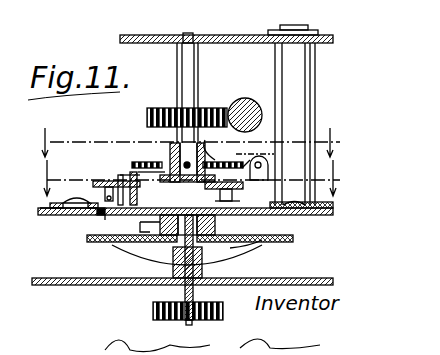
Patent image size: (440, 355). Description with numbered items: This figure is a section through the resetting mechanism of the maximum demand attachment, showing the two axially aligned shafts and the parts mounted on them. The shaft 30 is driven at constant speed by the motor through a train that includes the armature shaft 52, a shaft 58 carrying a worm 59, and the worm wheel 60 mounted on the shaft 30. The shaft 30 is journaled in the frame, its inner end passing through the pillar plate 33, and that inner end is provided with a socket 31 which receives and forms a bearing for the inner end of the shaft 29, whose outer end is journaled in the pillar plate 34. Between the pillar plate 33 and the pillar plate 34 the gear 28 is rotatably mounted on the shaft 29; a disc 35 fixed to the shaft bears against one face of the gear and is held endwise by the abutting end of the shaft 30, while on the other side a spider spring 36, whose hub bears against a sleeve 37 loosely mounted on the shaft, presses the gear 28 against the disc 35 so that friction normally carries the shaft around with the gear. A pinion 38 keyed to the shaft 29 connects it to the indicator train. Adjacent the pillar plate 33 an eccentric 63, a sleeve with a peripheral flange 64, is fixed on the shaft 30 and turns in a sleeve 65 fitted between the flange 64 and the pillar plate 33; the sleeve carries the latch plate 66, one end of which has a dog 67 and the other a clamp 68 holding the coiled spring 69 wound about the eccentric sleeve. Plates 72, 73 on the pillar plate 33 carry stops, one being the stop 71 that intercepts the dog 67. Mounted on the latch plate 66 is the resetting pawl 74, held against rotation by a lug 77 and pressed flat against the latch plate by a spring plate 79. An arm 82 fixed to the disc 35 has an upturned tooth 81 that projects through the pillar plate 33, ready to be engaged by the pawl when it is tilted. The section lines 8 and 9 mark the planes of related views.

The armature shaft 52 is at (232, 24).
The shaft 30 is at (176, 70).
The worm wheel 60 is at (150, 109).
The worm 59 is at (246, 98).
The shaft 58 is at (264, 116).
The plate 72 is at (334, 206).
The Fig. 8 section line 8 is at (183, 142).
The Fig. 9 section line 9 is at (187, 178).
The eccentric 63 is at (169, 164).
The dog 67 is at (74, 228).
The coiled spring 69 is at (246, 166).
The clamp 68 is at (268, 160).
The sleeve 65 is at (240, 201).
The latch plate 66 is at (293, 194).
The pillar plate 33 is at (60, 216).
The resetting pawl 74 is at (93, 186).
The plate 73 is at (70, 200).
The lug 77 is at (40, 208).
The stop 71 is at (100, 166).
The peripheral flange 64 is at (132, 174).
The spring plate 79 is at (105, 217).
The gear 28 is at (88, 240).
The arm 82 is at (230, 236).
The tooth 81 is at (146, 228).
The socket 31 is at (160, 244).
The sleeve 37 is at (172, 265).
The shaft 29 is at (185, 294).
The pinion 38 is at (152, 310).
The spring 36 is at (210, 256).
The disc 35 is at (250, 250).
The pillar plate 34 is at (36, 278).